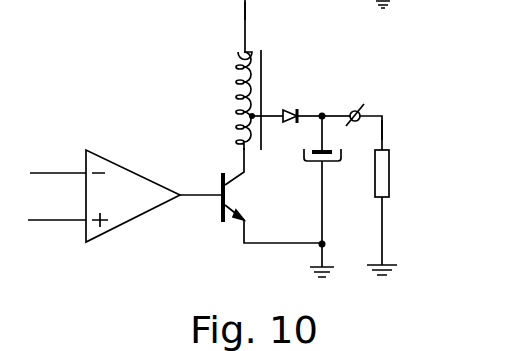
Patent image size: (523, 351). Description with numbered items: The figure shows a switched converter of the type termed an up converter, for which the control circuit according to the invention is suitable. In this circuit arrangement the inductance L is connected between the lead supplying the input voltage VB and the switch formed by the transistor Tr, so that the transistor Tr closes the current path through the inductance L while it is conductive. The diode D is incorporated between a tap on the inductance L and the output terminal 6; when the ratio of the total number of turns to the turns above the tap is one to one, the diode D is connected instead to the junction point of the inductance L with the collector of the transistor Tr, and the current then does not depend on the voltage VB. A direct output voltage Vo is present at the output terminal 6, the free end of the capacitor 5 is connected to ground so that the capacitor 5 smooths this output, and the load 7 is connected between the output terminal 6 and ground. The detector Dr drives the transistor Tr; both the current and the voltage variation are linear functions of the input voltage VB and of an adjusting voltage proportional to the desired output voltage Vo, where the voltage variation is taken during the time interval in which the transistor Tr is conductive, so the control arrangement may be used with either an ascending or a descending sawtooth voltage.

The detector Dr is at (143, 173).
The transistor Tr is at (228, 193).
The inductance L is at (237, 99).
The input voltage VB is at (246, 28).
The diode D is at (290, 109).
The output terminal 6 is at (358, 107).
The output voltage Vo is at (384, 130).
The load 7 is at (390, 181).
The capacitor 5 is at (308, 162).